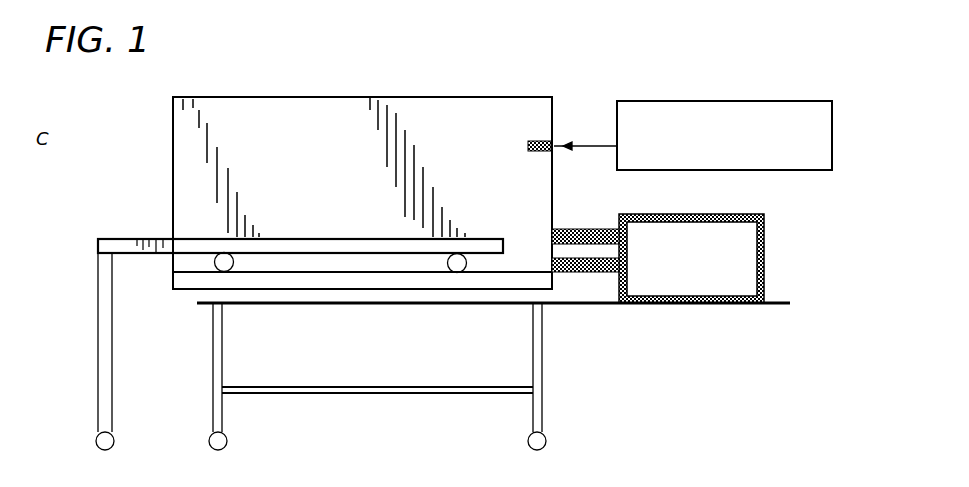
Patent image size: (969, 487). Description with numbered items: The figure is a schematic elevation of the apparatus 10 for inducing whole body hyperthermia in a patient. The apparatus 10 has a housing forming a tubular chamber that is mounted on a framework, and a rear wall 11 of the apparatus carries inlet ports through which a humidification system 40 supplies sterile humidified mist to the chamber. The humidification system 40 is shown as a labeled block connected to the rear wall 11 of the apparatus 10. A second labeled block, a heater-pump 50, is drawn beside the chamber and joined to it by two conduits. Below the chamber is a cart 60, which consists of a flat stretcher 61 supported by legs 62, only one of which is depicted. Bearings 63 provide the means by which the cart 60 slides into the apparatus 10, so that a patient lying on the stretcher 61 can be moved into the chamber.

The apparatus 10 is at (138, 120).
The rear wall 11 is at (553, 117).
The humidification system 40 is at (834, 138).
The heater-pump 50 is at (765, 262).
The cart 60 is at (97, 339).
The flat stretcher 61 is at (120, 239).
The leg 62 is at (110, 373).
The bearings 63 is at (228, 272).